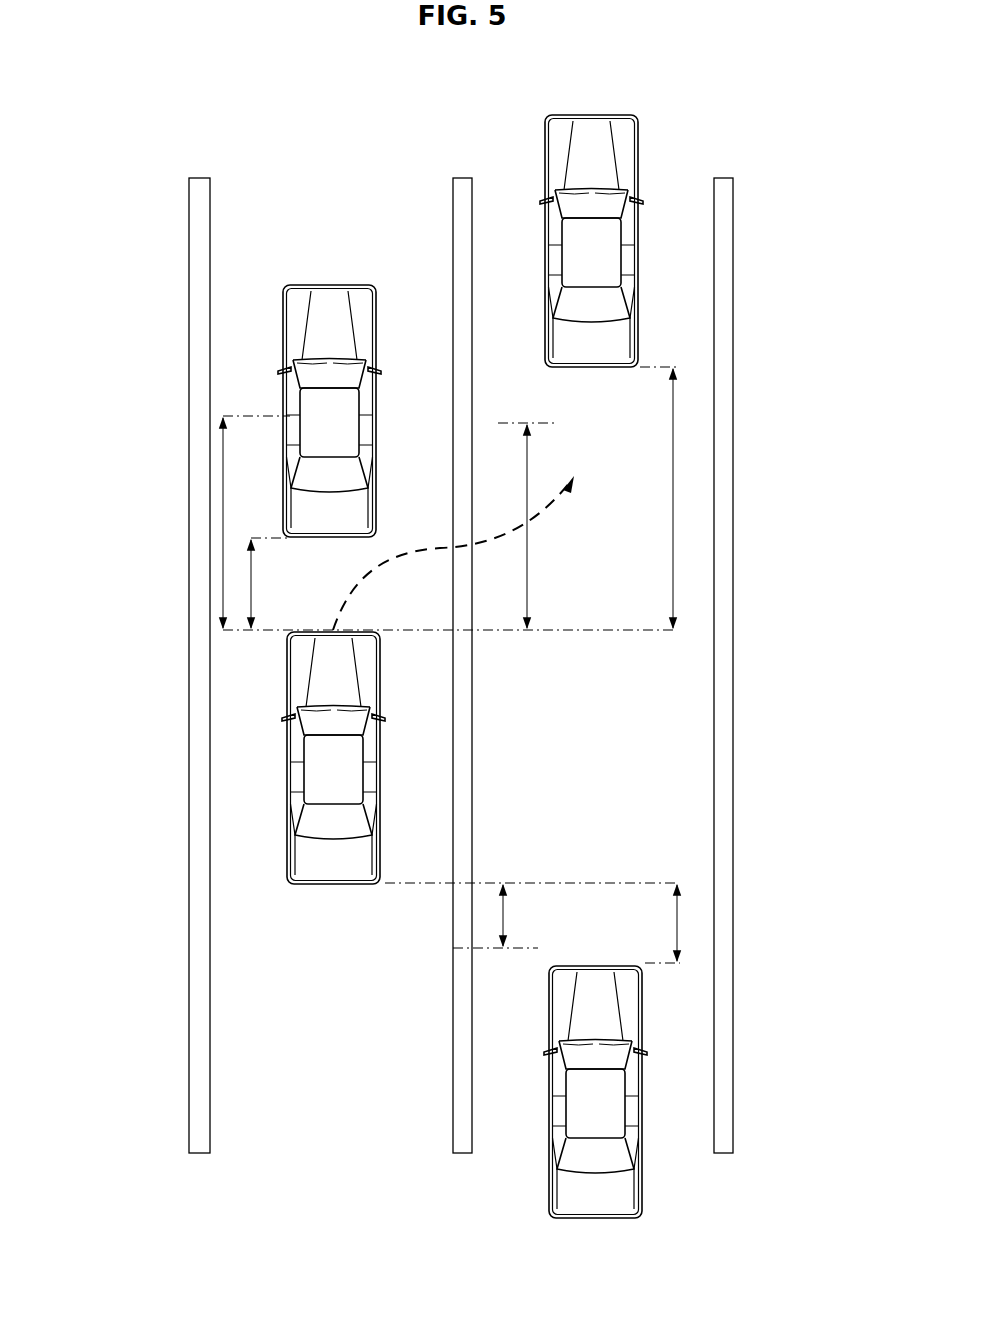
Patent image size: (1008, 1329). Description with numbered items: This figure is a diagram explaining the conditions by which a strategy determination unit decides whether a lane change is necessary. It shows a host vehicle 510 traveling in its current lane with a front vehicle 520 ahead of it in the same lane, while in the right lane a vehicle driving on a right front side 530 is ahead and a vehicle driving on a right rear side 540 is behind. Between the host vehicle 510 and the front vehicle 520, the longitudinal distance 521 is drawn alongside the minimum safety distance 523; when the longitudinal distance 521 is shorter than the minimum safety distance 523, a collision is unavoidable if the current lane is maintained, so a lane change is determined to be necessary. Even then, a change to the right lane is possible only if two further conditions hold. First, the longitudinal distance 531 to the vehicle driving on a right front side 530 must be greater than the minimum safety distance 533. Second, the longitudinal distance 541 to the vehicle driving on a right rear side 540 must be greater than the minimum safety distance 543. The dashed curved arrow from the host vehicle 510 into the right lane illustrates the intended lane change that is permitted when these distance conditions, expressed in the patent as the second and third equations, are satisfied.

The host vehicle 510 is at (335, 884).
The front vehicle 520 is at (331, 283).
The vehicle driving on a right front side 530 is at (591, 113).
The vehicle driving on a right rear side 540 is at (642, 1128).
The longitudinal distance (d_x,FVI) 521 is at (251, 578).
The minimum safety distance (d_min,FVI) 523 is at (223, 478).
The longitudinal distance (d_x,FVR) 531 is at (673, 478).
The minimum safety distance (d_min,FVR) 533 is at (527, 560).
The longitudinal distance (d_x,RVR) 541 is at (677, 942).
The minimum safety distance (d_min,RVR) 543 is at (503, 917).